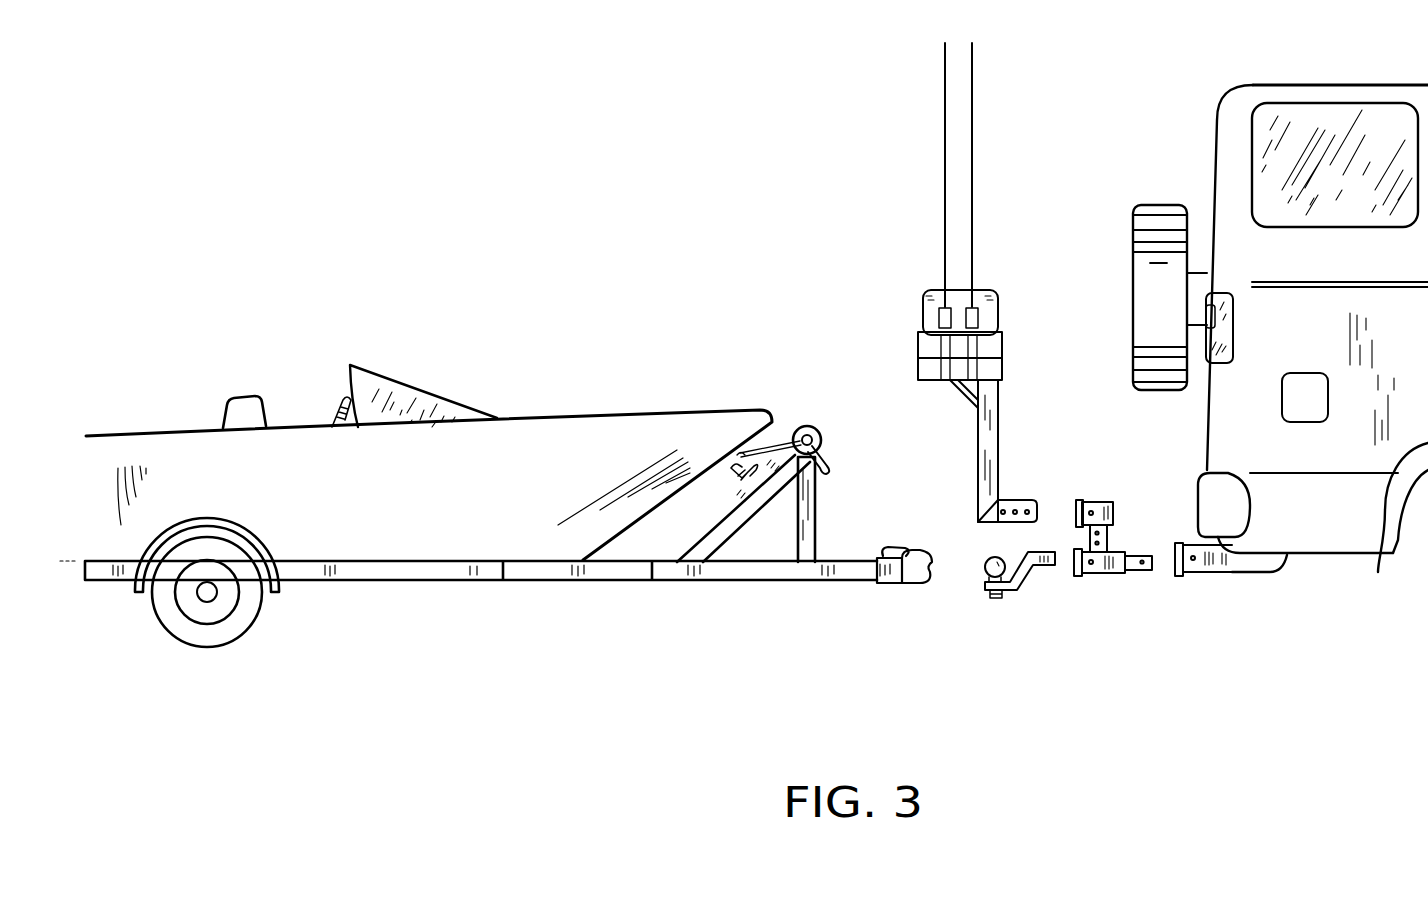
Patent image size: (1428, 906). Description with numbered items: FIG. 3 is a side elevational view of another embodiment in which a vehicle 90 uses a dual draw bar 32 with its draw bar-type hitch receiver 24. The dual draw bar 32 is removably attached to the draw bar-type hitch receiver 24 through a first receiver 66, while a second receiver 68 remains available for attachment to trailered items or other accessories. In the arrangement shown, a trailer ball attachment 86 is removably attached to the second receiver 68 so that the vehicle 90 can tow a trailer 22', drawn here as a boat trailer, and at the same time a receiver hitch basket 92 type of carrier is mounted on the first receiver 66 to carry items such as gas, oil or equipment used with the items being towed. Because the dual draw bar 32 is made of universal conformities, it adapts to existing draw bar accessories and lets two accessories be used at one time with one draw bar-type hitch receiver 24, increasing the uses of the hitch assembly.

The trailer 22' is at (496, 551).
The draw bar-type hitch receiver 24 is at (1225, 565).
The dual draw bar 32 is at (1115, 547).
The first receiver 66 is at (1097, 508).
The second receiver 68 is at (1097, 568).
The trailer ball attachment 86 is at (1023, 587).
The vehicle 90 is at (1238, 118).
The receiver hitch basket 92 is at (990, 433).